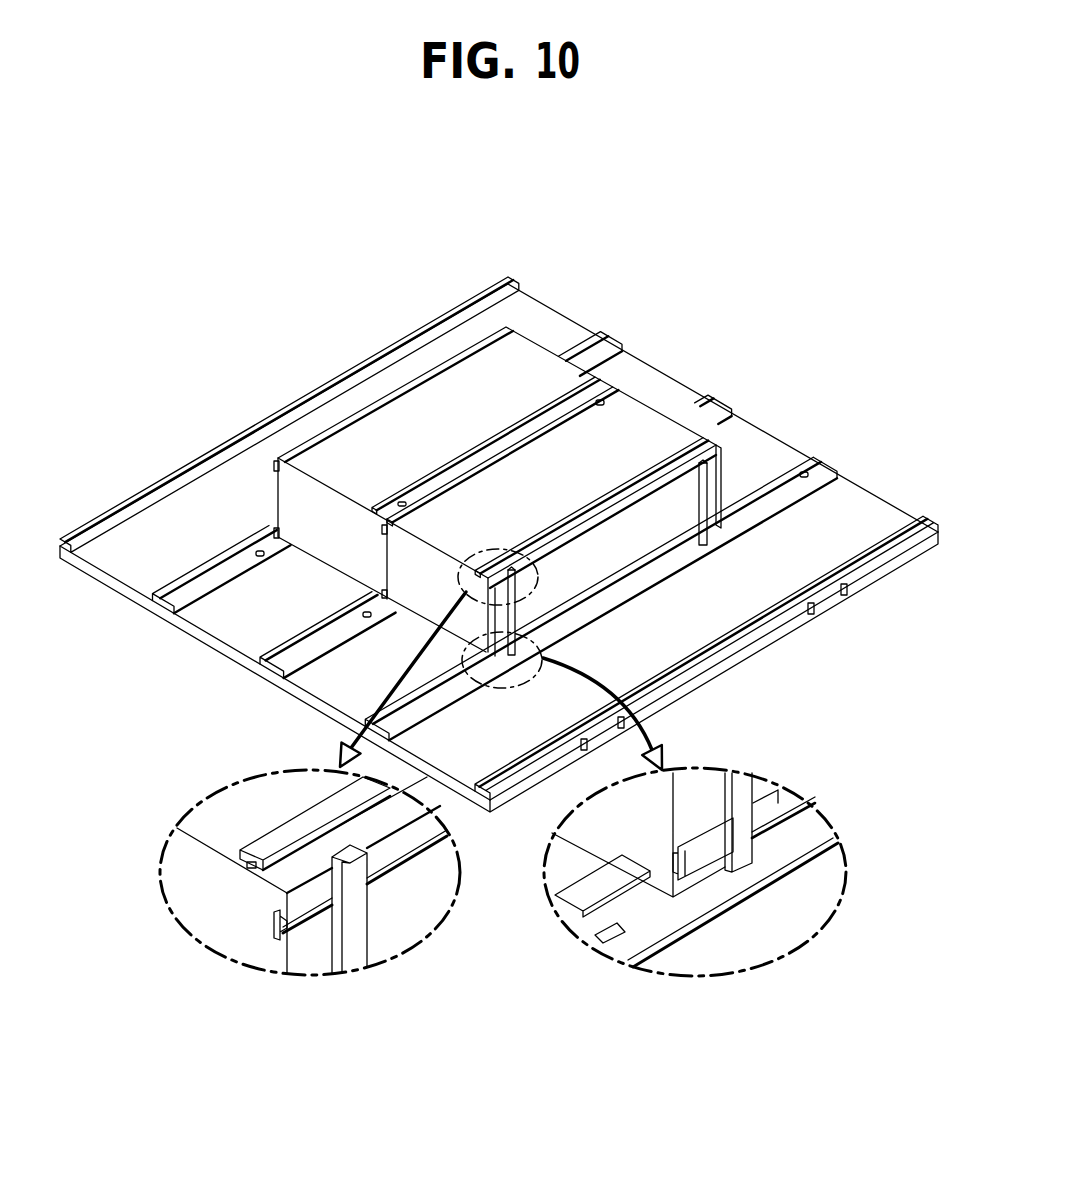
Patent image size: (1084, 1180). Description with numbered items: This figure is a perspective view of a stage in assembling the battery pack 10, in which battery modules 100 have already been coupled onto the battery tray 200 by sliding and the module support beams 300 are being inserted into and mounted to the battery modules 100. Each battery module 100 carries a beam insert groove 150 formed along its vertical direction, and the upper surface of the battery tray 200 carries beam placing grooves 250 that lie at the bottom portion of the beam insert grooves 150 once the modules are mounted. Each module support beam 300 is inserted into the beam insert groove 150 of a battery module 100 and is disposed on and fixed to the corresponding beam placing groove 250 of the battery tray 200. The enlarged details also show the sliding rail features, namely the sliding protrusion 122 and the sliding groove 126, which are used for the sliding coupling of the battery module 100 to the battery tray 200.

The battery pack 10 is at (251, 258).
The battery module 100 is at (437, 352).
The battery tray 200 is at (134, 466).
The module support beam 300 is at (296, 447).
The beam insert groove 150 is at (345, 848).
The sliding groove 126 is at (283, 927).
The sliding protrusion 122 is at (720, 835).
The beam placing groove 250 is at (745, 865).